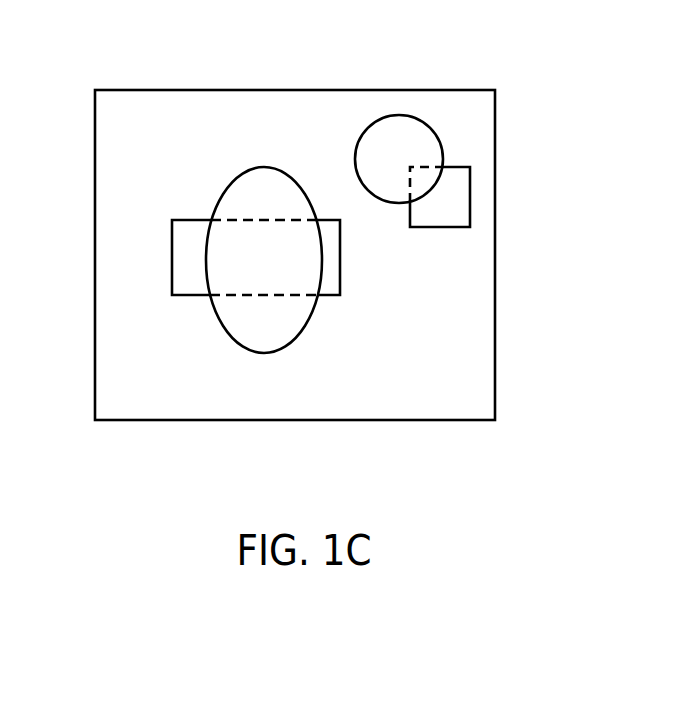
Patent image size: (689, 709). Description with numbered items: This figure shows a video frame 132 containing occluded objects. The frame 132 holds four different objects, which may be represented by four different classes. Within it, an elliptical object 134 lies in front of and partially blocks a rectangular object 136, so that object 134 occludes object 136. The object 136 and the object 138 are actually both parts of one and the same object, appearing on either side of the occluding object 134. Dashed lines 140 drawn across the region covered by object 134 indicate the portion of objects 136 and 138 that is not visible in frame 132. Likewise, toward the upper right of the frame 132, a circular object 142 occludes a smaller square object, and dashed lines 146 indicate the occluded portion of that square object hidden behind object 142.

The frame 132 is at (129, 90).
The object 134 is at (222, 194).
The object 136 is at (172, 262).
The object 138 is at (328, 220).
The dashed lines 140 is at (268, 220).
The object 142 is at (428, 128).
The dashed lines 146 is at (425, 160).